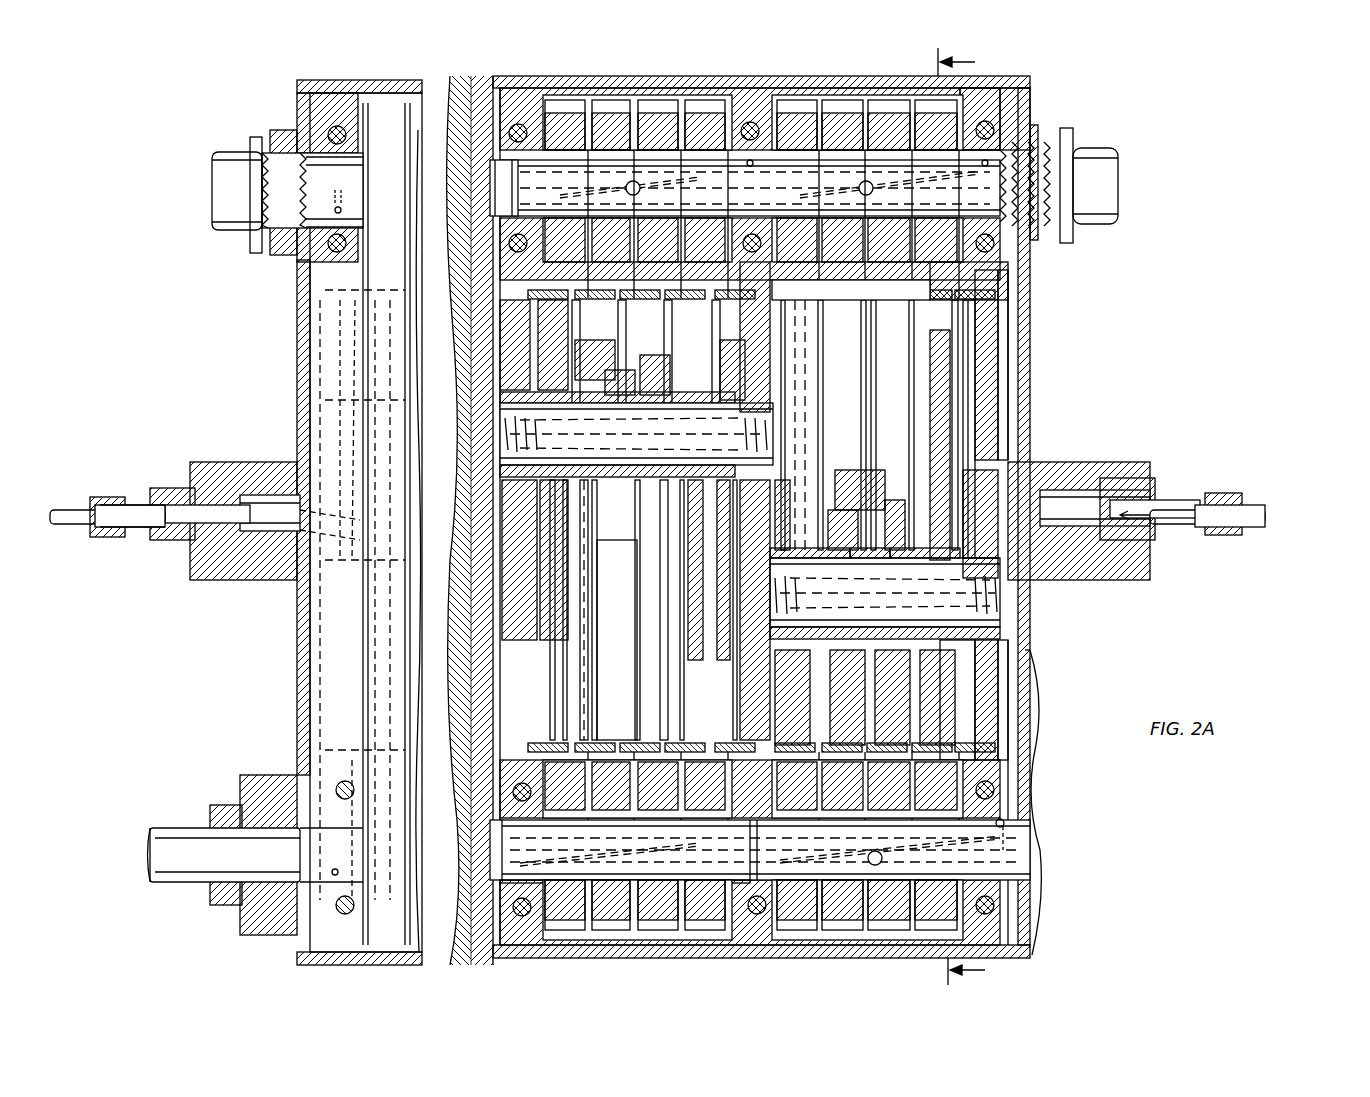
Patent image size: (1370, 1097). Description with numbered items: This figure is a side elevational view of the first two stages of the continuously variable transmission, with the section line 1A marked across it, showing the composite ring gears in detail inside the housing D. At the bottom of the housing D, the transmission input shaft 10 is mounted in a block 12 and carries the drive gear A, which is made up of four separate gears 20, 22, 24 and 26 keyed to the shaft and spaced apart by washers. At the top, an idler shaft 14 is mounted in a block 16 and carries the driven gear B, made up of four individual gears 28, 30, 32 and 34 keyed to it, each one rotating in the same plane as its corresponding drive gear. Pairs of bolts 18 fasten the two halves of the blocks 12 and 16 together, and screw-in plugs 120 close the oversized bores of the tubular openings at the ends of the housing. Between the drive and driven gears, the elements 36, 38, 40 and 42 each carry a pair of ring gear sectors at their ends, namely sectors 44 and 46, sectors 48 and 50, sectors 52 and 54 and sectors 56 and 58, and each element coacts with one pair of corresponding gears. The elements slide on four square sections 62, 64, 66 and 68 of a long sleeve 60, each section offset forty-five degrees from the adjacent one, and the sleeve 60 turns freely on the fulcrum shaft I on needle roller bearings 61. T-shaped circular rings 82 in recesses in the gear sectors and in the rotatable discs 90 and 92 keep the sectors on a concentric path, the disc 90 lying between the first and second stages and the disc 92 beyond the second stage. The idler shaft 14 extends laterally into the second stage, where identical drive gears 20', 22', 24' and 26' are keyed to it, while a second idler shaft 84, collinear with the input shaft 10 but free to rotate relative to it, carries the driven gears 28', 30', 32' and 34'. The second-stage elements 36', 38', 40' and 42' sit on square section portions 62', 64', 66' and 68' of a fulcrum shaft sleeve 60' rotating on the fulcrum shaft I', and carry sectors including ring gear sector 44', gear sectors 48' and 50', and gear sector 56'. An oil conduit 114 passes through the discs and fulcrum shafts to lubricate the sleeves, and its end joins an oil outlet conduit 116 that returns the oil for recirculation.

The transmission input shaft 10 is at (1010, 838).
The block 12 is at (1018, 928).
The idler shaft 14 is at (1050, 190).
The block 16 is at (1010, 100).
The bolts 18 is at (330, 130).
The gear 20 is at (1041, 523).
The gear 22 is at (889, 846).
The gear 24 is at (842, 846).
The gear 26 is at (867, 850).
The gear 28 is at (936, 181).
The gear 30 is at (889, 181).
The gear 32 is at (842, 158).
The gear 34 is at (867, 158).
The element 36 is at (939, 445).
The element 38 is at (896, 508).
The element 40 is at (843, 517).
The element 42 is at (794, 484).
The ring gear sector 44 is at (1016, 281).
The ring gear sector 46 is at (1000, 760).
The ring gear sector 48 is at (965, 415).
The ring gear sector 50 is at (907, 697).
The ring gear sector 52 is at (618, 352).
The ring gear sector 54 is at (625, 560).
The ring gear sector 56 is at (869, 425).
The ring gear sector 58 is at (820, 710).
The sleeve 60 is at (929, 628).
The needle roller bearings 61 is at (510, 480).
The square section 62 is at (966, 545).
The square section 64 is at (925, 568).
The square section 66 is at (870, 568).
The square section 68 is at (810, 568).
The T-shape cross-sectioned circular rings 82 is at (628, 290).
The second idler shaft 84 is at (600, 880).
The rotatable disc 90 is at (772, 298).
The rotatable disc 92 is at (462, 284).
The oil conduit 114 is at (355, 535).
The oil outlet conduit 116 is at (128, 508).
The screw-in plugs 120 is at (220, 160).
The gear 20' is at (705, 158).
The gear 22' is at (658, 158).
The gear 24' is at (611, 158).
The gear 26' is at (637, 158).
The driven gear 28' is at (705, 846).
The driven gear 30' is at (658, 846).
The driven gear 32' is at (611, 846).
The driven gear 34' is at (637, 850).
The element 36' is at (712, 610).
The element 38' is at (666, 610).
The element 40' is at (616, 610).
The element 42' is at (570, 610).
The ring gear sector 44' is at (755, 337).
The gear sector 48' is at (575, 345).
The gear sector 50' is at (537, 610).
The gear sector 56' is at (574, 370).
The fulcrum shaft sleeve 60' is at (617, 482).
The square section portion 62' is at (738, 370).
The square section portion 64' is at (666, 372).
The square section portion 66' is at (632, 379).
The square section portion 68' is at (581, 386).
The drive gear A is at (1012, 900).
The driven gear B is at (1000, 115).
The housing D is at (1050, 740).
The fulcrum shaft I is at (885, 592).
The fulcrum shaft I' is at (636, 434).
The section line 1A is at (977, 516).